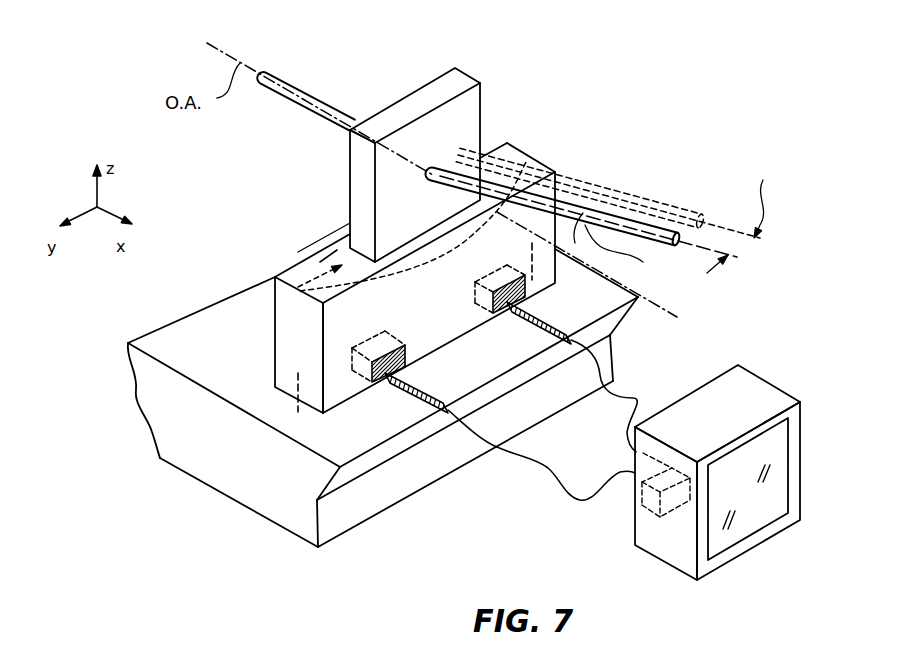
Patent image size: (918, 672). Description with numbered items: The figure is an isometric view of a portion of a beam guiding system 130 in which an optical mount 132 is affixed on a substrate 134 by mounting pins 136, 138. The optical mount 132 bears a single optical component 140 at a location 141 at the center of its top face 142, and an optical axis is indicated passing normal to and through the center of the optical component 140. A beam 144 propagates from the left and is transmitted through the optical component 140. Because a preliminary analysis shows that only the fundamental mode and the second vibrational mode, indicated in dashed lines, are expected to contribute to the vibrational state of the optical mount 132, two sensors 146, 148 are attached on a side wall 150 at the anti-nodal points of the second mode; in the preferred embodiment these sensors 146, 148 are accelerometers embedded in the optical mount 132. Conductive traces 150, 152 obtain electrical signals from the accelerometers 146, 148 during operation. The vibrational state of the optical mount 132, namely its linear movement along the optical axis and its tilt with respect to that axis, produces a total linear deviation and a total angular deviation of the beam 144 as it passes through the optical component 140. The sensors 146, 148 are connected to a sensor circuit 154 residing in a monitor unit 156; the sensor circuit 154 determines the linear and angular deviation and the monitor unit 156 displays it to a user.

The beam guiding system 130 is at (606, 58).
The optical mount 132 is at (273, 331).
The substrate 134 is at (153, 397).
The mounting pin 136 is at (298, 390).
The mounting pin 138 is at (545, 240).
The optical component 140 is at (350, 179).
The location 141 is at (305, 290).
The top face 142 is at (298, 273).
The beam 144 is at (305, 94).
The sensor 146 is at (402, 343).
The sensor 148 is at (480, 290).
The conductive trace 150 is at (410, 393).
The conductive trace 152 is at (523, 318).
The sensor circuit 154 is at (635, 533).
The monitor unit 156 is at (766, 380).